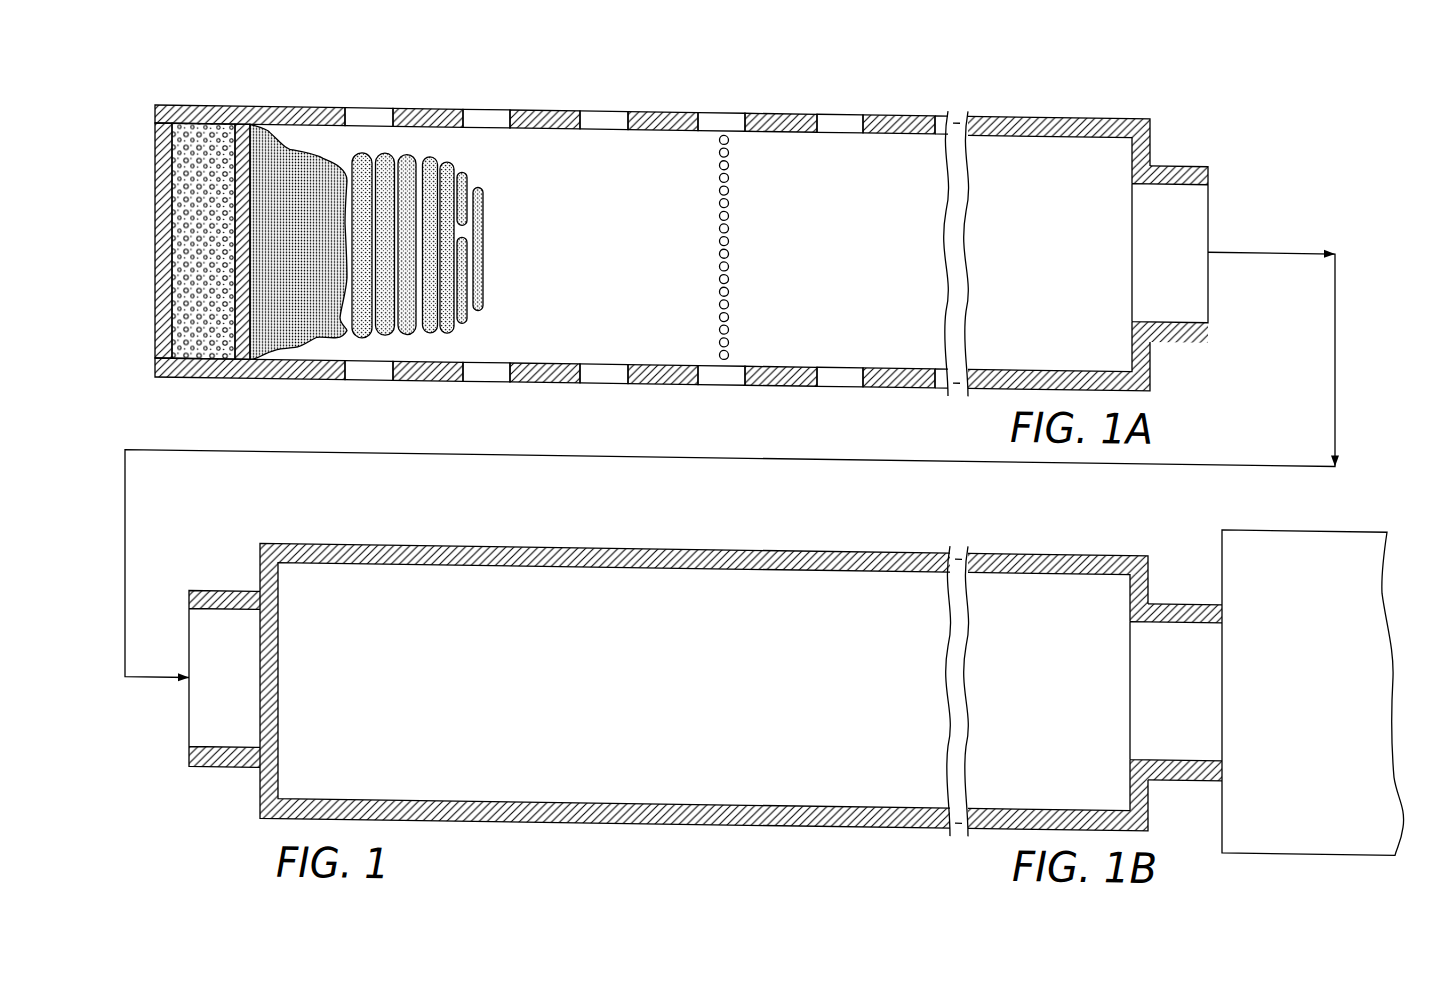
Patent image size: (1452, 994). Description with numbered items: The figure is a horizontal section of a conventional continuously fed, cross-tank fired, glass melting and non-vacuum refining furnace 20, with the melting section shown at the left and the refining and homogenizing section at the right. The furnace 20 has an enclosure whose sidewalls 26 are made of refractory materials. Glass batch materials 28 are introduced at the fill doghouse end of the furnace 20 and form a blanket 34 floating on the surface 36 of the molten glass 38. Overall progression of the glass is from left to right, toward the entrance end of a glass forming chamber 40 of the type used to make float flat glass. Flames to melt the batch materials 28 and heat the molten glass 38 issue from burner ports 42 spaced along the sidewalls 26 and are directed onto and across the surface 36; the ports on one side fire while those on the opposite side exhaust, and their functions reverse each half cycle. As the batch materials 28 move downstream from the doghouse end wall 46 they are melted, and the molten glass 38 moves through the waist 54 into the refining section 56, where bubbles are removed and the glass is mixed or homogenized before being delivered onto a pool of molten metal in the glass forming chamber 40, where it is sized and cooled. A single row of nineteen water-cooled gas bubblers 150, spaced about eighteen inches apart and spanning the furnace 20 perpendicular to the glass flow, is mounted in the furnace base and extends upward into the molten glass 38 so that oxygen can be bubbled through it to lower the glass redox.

In FIG. 1A, the glass melting and non-vacuum refining furnace 20 is at (896, 82).
In FIG. 1B, the glass melting and non-vacuum refining furnace 20 is at (870, 532).
In FIG. 1A, the sidewalls 26 is at (661, 378).
In FIG. 1B, the sidewalls 26 is at (672, 540).
In FIG. 1A, the glass batch materials 28 is at (430, 153).
In FIG. 1A, the blanket 34 is at (484, 240).
In FIG. 1A, the surface of molten glass 36 is at (622, 260).
In FIG. 1B, the molten glass 38 is at (808, 776).
In FIG. 1B, the glass forming chamber 40 is at (1292, 839).
In FIG. 1A, the burner ports 42 is at (370, 103).
In FIG. 1A, the doghouse end wall 46 is at (155, 250).
In FIG. 1A, the waist 54 is at (1180, 151).
In FIG. 1B, the waist 54 is at (214, 589).
In FIG. 1B, the refining section 56 is at (506, 528).
In FIG. 1A, the gas bubblers 150 is at (730, 245).